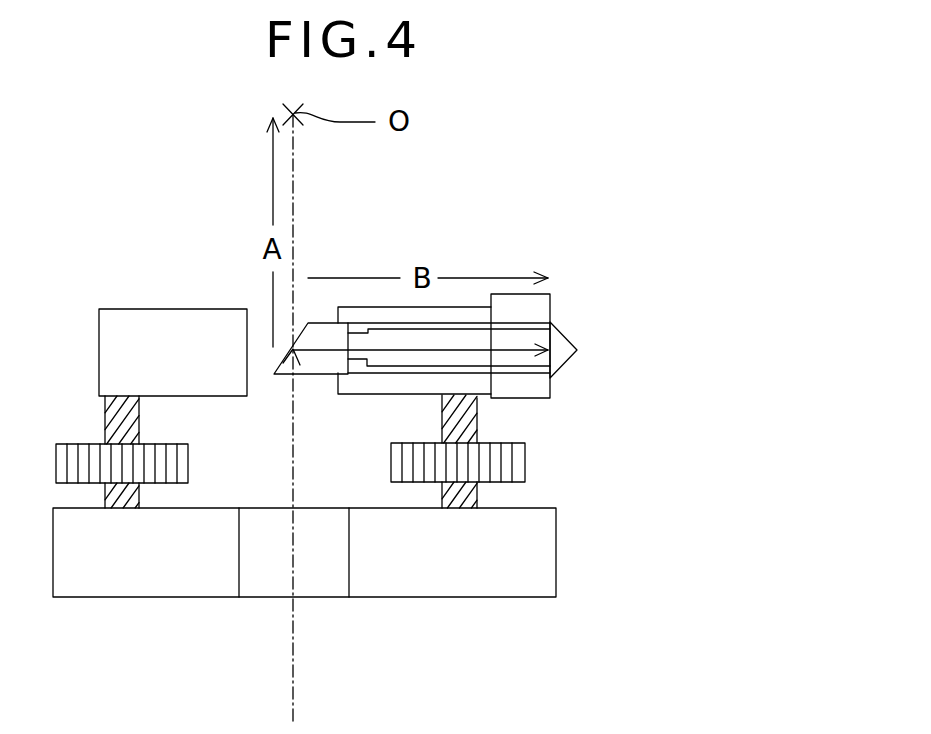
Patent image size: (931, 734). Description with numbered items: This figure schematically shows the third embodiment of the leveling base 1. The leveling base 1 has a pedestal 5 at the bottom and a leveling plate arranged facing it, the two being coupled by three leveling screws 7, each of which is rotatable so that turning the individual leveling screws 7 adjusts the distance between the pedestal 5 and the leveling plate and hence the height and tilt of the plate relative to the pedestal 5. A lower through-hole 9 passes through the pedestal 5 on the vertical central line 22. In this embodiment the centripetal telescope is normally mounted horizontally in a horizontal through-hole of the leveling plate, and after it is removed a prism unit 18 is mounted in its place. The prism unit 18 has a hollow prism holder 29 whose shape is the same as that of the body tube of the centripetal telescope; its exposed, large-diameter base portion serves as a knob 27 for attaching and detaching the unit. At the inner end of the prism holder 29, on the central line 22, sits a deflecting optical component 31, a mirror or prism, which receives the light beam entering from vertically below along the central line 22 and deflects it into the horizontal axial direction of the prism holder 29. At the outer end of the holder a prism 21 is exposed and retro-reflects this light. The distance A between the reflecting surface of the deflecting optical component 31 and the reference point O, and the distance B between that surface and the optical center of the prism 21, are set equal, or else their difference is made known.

The leveling base 1 is at (158, 308).
The pedestal 5 is at (556, 528).
The leveling screw 7 is at (525, 462).
The lower through-hole 9 is at (269, 587).
The prism unit 18 is at (510, 292).
The prism 21 is at (565, 335).
The central line 22 is at (294, 660).
The knob 27 is at (528, 399).
The prism holder 29 is at (412, 373).
The deflecting optical component 31 is at (307, 375).